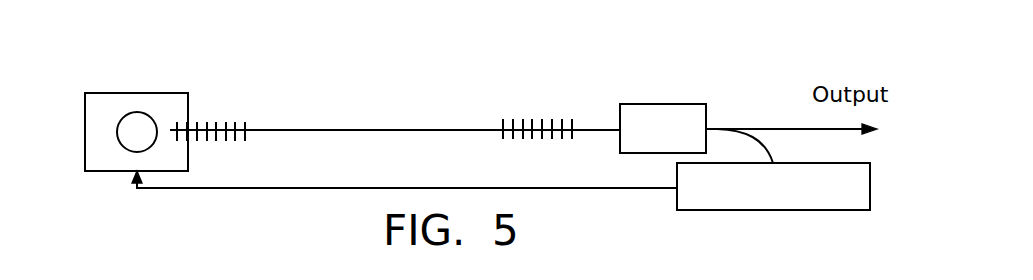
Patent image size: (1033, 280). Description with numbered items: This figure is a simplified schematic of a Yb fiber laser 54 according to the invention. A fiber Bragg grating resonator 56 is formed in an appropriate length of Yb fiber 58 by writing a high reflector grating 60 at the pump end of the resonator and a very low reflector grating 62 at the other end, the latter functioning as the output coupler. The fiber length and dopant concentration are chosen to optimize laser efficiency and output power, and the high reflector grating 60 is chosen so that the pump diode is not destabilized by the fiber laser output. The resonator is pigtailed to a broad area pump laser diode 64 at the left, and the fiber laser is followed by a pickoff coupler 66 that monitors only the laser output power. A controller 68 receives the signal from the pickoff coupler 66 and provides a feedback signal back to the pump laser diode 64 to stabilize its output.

The Yb fiber laser 54 is at (268, 64).
The fiber Bragg grating resonator 56 is at (453, 112).
The Yb fiber 58 is at (295, 129).
The high reflector grating 60 is at (215, 138).
The low reflector grating 62 is at (503, 135).
The pump laser diode 64 is at (123, 93).
The pickoff coupler 66 is at (670, 104).
The controller 68 is at (728, 212).